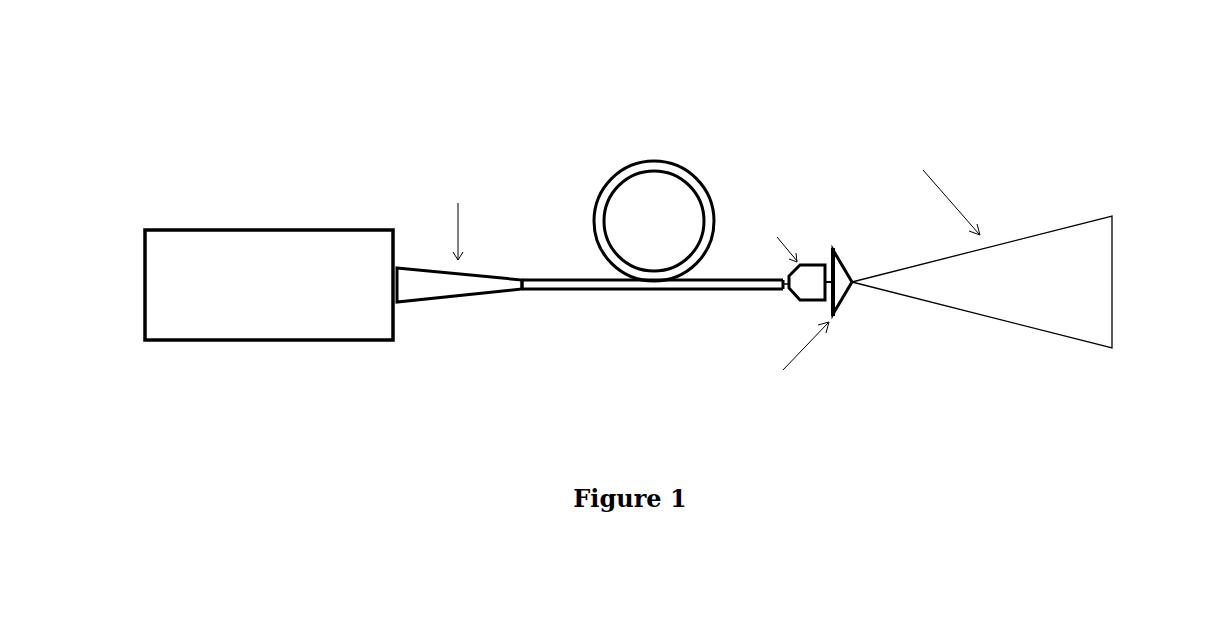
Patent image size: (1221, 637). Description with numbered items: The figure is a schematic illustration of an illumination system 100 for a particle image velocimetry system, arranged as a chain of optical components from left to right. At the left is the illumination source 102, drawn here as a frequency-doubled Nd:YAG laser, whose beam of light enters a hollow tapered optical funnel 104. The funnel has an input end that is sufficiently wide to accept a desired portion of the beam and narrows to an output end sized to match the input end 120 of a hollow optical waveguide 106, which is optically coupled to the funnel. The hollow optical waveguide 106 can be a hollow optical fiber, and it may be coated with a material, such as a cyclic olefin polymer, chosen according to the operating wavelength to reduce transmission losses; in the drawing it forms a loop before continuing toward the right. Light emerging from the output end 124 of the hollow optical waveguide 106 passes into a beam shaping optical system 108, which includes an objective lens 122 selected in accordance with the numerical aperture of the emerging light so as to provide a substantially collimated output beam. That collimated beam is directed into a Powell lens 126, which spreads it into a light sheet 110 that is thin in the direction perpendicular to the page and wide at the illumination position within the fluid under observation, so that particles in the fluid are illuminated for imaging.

The illumination system 100 is at (1123, 76).
The illumination source 102 is at (258, 343).
The hollow tapered optical funnel 104 is at (458, 298).
The hollow optical waveguide 106 is at (657, 291).
The beam shaping optical system 108 is at (923, 378).
The light sheet 110 is at (985, 318).
The input end of the hollow optical waveguide 120 is at (524, 289).
The objective lens 122 is at (803, 303).
The output end of the hollow optical waveguide 124 is at (779, 277).
The Powell lens 126 is at (843, 267).